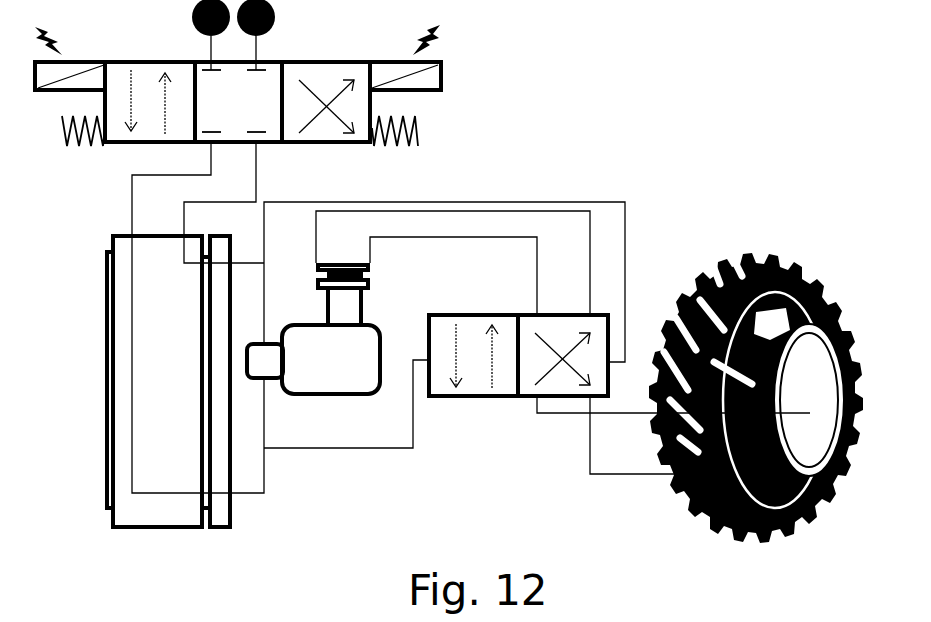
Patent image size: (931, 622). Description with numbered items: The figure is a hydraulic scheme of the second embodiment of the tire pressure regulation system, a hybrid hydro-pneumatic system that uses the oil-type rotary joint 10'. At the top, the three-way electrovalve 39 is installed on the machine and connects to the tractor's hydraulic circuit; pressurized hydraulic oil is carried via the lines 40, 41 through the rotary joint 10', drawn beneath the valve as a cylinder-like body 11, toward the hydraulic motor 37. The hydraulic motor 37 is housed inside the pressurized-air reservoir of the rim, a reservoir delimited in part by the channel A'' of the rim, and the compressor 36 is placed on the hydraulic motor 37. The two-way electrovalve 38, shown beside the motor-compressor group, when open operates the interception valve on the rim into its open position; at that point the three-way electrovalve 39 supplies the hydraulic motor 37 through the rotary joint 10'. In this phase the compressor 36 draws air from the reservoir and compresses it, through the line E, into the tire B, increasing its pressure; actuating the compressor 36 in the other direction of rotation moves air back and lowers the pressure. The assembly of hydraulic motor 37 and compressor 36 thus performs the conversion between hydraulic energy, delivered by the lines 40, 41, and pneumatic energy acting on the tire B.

The three-way electrovalve 39 is at (282, 61).
The line 41 is at (257, 174).
The line 40 is at (132, 200).
The compressor 36 is at (338, 372).
The hydraulic motor 37 is at (265, 362).
The two-way electrovalve 38 is at (505, 390).
The hydraulic cylinder 11 is at (105, 480).
The rotary joint 10' is at (116, 574).
The tire B is at (810, 262).
The line E is at (618, 476).
The channel of the rim A'' is at (665, 19).